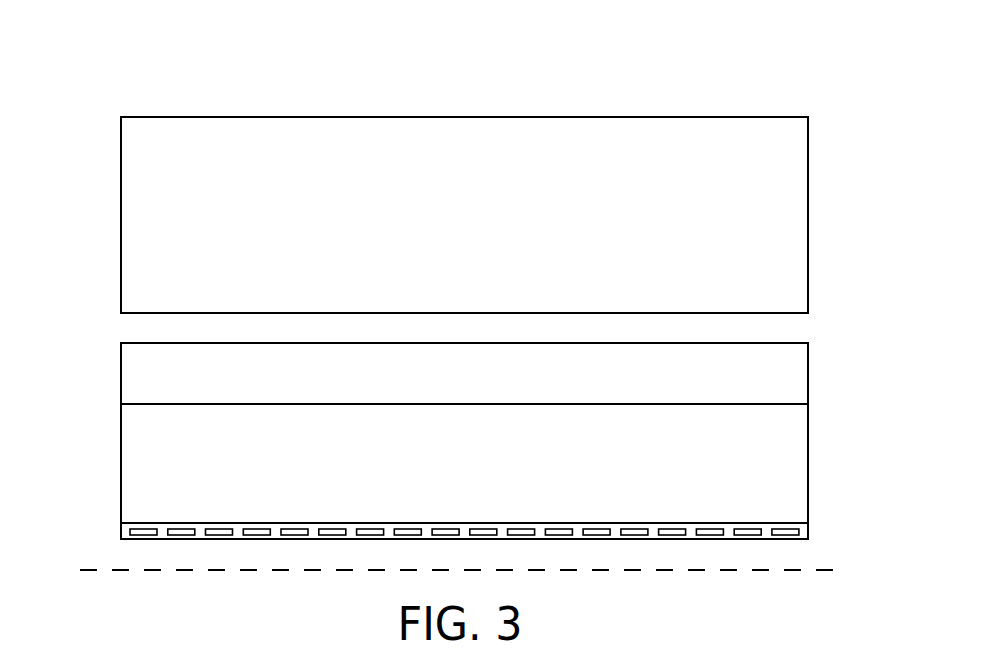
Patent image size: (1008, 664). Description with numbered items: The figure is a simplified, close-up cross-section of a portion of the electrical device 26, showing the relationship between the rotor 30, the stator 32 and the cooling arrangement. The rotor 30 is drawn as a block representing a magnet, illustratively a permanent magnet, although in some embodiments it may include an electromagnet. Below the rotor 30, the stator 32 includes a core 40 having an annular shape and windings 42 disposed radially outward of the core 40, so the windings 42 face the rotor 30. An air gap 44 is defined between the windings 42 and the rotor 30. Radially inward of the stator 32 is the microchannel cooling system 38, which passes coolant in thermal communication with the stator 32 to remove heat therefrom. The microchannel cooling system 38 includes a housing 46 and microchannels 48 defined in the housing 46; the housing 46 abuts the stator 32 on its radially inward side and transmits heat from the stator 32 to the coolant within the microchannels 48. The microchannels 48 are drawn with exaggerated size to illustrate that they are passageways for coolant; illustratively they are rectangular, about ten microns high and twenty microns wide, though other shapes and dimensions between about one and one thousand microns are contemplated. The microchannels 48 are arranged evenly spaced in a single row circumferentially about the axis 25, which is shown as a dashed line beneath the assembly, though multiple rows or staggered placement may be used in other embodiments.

The electrical device 26 is at (806, 79).
The rotor 30 is at (95, 146).
The stator 32 is at (95, 378).
The windings 42 is at (783, 376).
The core 40 is at (783, 439).
The air gap 44 is at (802, 330).
The housing 46 is at (808, 532).
The microchannel cooling system 38 is at (197, 545).
The microchannels 48 is at (260, 543).
The axis 25 is at (84, 569).